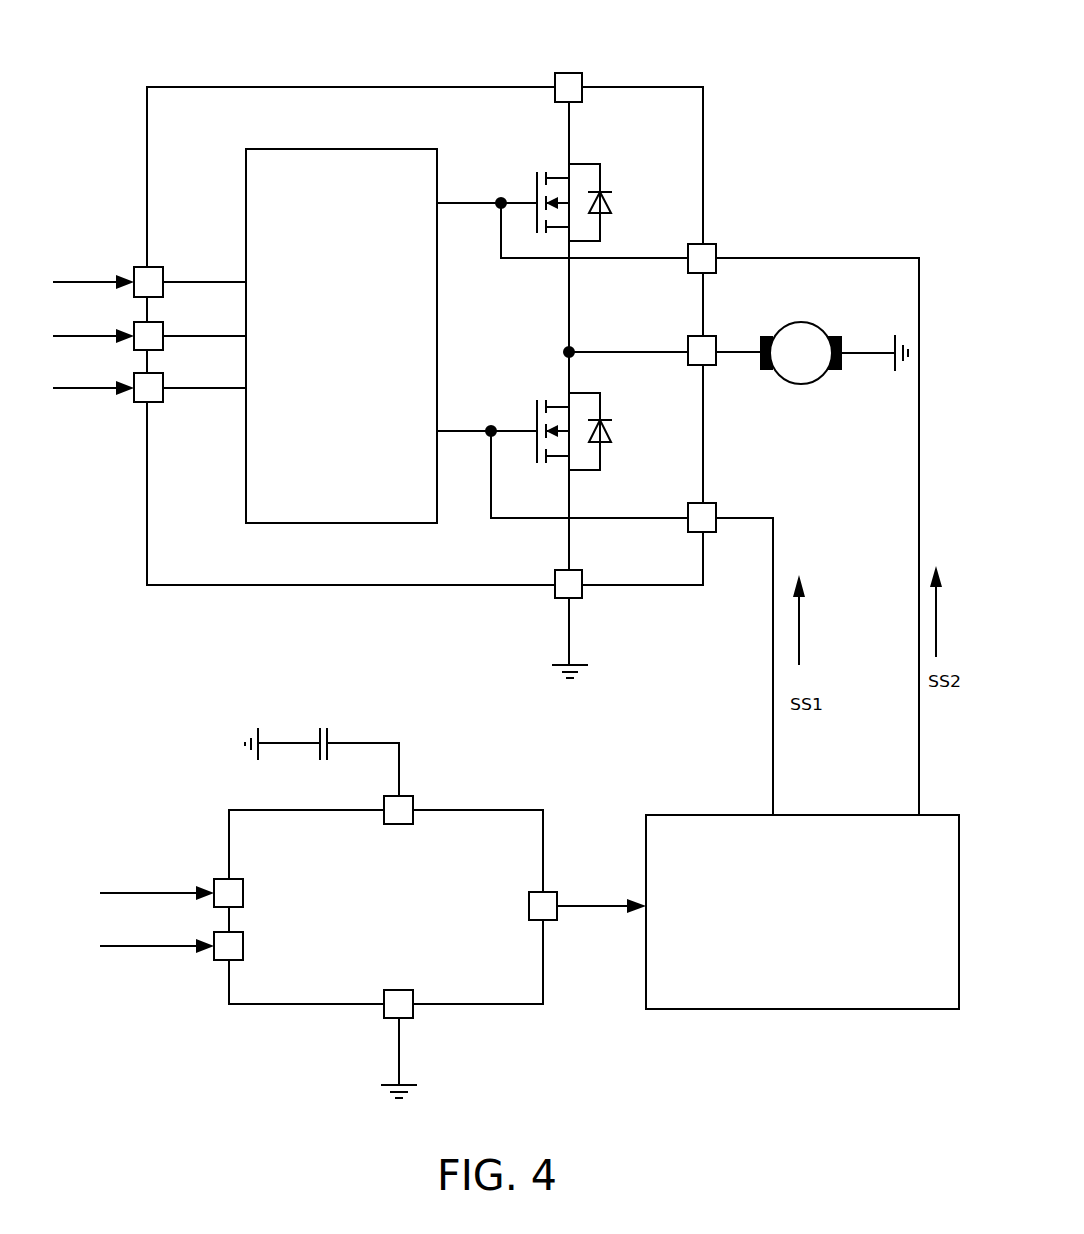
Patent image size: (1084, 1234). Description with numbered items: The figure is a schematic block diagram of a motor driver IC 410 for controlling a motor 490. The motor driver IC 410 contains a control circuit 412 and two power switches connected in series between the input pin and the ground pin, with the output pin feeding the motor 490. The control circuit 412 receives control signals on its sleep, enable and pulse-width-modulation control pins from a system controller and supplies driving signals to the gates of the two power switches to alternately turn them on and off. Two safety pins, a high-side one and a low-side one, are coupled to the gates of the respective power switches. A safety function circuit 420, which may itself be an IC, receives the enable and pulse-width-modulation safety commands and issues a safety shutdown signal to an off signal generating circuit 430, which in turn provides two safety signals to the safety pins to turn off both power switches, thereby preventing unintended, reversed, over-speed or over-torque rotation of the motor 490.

The motor driver IC 410 is at (400, 351).
The control circuit 412 is at (392, 122).
The safety function circuit 420 is at (462, 810).
The off signal generating circuit 430 is at (703, 1009).
The motor 490 is at (800, 321).